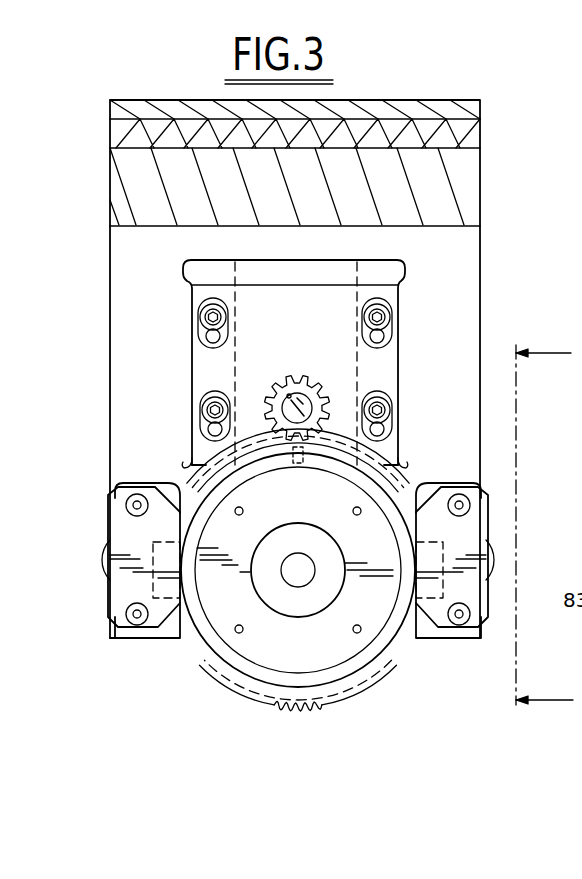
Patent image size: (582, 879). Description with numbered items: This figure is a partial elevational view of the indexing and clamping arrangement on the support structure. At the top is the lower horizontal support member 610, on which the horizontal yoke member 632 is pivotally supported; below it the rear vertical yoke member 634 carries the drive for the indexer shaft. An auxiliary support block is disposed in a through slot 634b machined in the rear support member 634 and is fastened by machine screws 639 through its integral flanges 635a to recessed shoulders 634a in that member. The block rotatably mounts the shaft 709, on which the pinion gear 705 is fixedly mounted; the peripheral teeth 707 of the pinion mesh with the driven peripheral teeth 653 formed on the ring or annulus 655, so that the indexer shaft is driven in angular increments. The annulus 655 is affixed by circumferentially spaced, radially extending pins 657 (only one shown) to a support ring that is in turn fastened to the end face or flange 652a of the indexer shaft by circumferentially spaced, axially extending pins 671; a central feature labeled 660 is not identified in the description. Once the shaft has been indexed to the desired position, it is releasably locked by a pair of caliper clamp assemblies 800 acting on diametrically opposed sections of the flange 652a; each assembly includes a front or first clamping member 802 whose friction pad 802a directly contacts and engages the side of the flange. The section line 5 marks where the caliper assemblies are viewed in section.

The lower horizontal support member 610 is at (478, 96).
The horizontal yoke member 632 is at (482, 163).
The rear vertical yoke member 634 is at (470, 269).
The recessed shoulders 634a is at (214, 268).
The through slot 634b is at (308, 266).
The integral flanges 635a is at (205, 350).
The machine screws 639 is at (228, 317).
The pinion gear 705 is at (288, 404).
The peripheral teeth 707 is at (285, 385).
The shaft 709 is at (303, 382).
The peripheral teeth 653 is at (399, 432).
The ring or annulus 655 is at (395, 490).
The radially extending pins 657 is at (296, 465).
The hub plate 660 is at (285, 604).
The axially extending pins 671 is at (237, 633).
The flange 652a is at (333, 657).
The first clamping member 802 is at (117, 517).
The friction pad 802a is at (150, 572).
The caliper clamp assemblies 800 is at (100, 641).
The section line 5- 5 is at (544, 530).